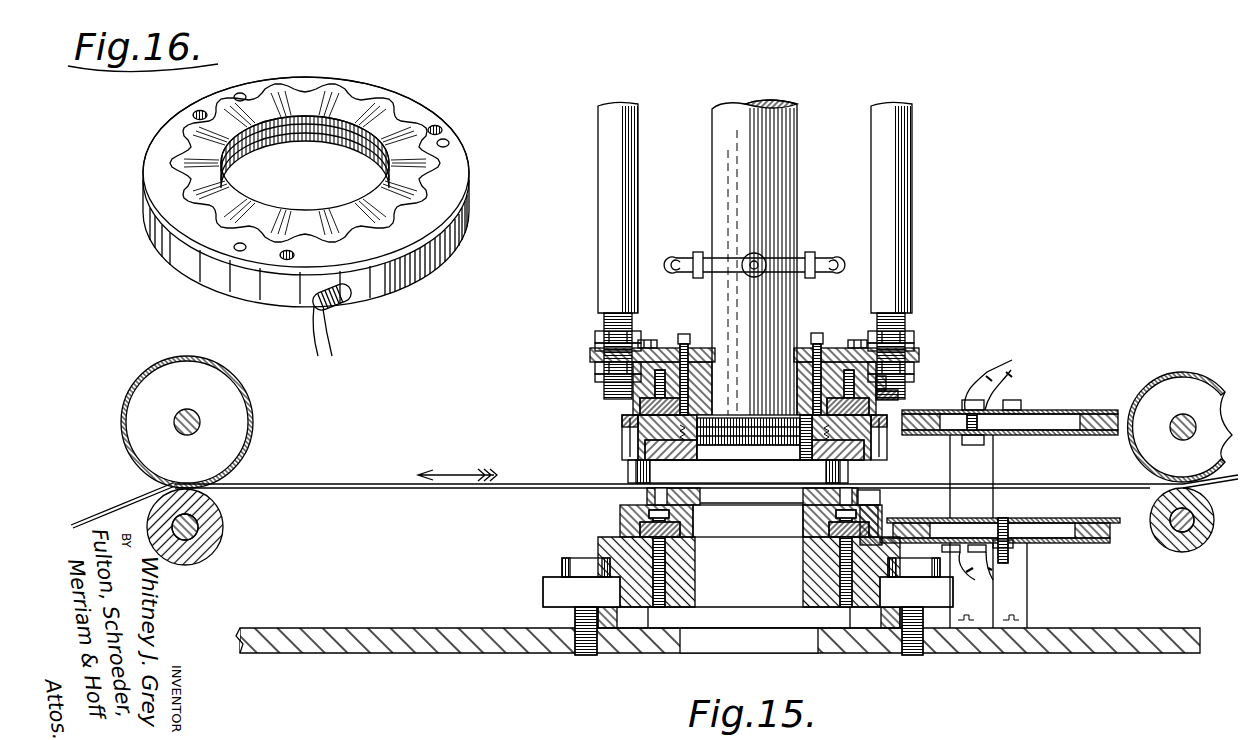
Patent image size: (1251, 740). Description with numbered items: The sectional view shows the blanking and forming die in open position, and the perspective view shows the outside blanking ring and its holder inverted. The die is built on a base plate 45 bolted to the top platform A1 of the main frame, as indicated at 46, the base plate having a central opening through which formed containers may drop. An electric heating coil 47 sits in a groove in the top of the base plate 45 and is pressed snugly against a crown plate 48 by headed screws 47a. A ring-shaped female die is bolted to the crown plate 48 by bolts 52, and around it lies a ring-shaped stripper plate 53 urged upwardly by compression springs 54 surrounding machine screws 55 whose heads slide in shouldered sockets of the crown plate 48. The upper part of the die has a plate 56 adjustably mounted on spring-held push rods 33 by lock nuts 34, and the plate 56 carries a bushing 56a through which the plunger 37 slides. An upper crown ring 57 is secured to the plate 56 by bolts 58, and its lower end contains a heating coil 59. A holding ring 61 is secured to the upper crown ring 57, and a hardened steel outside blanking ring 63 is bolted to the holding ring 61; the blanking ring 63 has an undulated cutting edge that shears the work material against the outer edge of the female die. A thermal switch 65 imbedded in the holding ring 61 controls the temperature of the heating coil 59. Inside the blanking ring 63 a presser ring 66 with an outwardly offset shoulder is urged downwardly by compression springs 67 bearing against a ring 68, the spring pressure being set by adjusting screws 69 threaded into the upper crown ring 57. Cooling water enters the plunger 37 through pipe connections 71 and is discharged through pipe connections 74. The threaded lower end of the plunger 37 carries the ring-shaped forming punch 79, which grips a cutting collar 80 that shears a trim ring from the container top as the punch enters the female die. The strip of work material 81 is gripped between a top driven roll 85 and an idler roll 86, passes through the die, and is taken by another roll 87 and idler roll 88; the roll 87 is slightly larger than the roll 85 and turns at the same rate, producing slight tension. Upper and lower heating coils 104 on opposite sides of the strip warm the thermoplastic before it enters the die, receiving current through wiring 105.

In FIG. 15, the plunger 37 is at (788, 161).
In FIG. 15, the push rods 33 is at (605, 213).
In FIG. 15, the lock nuts 34 is at (596, 337).
In FIG. 15, the plate 56 is at (592, 355).
In FIG. 15, the bushing 56a is at (814, 333).
In FIG. 15, the bolts 58 is at (860, 340).
In FIG. 15, the adjusting screws 69 is at (685, 334).
In FIG. 15, the pipe connections 74 is at (663, 274).
In FIG. 15, the pipe connections 71 is at (826, 275).
In FIG. 15, the upper crown ring 57 is at (888, 383).
In FIG. 15, the heating coil 59 is at (898, 398).
In FIG. 15, the ring 68 is at (623, 428).
In FIG. 16, the holding ring 61 is at (442, 255).
In FIG. 15, the holding ring 61 is at (626, 441).
In FIG. 16, the outside blanking ring 63 is at (242, 206).
In FIG. 15, the outside blanking ring 63 is at (632, 455).
In FIG. 15, the compression springs 67 is at (754, 431).
In FIG. 15, the presser ring 66 is at (738, 474).
In FIG. 15, the machine screws 55 is at (622, 525).
In FIG. 15, the cutting collar 80 is at (777, 435).
In FIG. 15, the forming punch 79 is at (800, 464).
In FIG. 15, the compression springs 54 is at (660, 502).
In FIG. 15, the electric heating coil 47 is at (622, 548).
In FIG. 15, the bolts 46 is at (561, 568).
In FIG. 15, the bolts 52 is at (704, 530).
In FIG. 15, the base plate 45 is at (688, 570).
In FIG. 15, the headed screws 47a is at (838, 560).
In FIG. 15, the stripper plate 53 is at (880, 497).
In FIG. 15, the crown plate 48 is at (882, 519).
In FIG. 15, the heating coils 104 is at (942, 410).
In FIG. 15, the wiring 105 is at (1014, 360).
In FIG. 15, the top platform A1 is at (1088, 633).
In FIG. 15, the top driven roll 85 is at (1188, 386).
In FIG. 15, the idler roll 86 is at (1181, 553).
In FIG. 15, the roll 87 is at (232, 413).
In FIG. 15, the idler roll 88 is at (225, 528).
In FIG. 15, the work material 81 is at (327, 486).
In FIG. 16, the thermal switch 65 is at (347, 308).